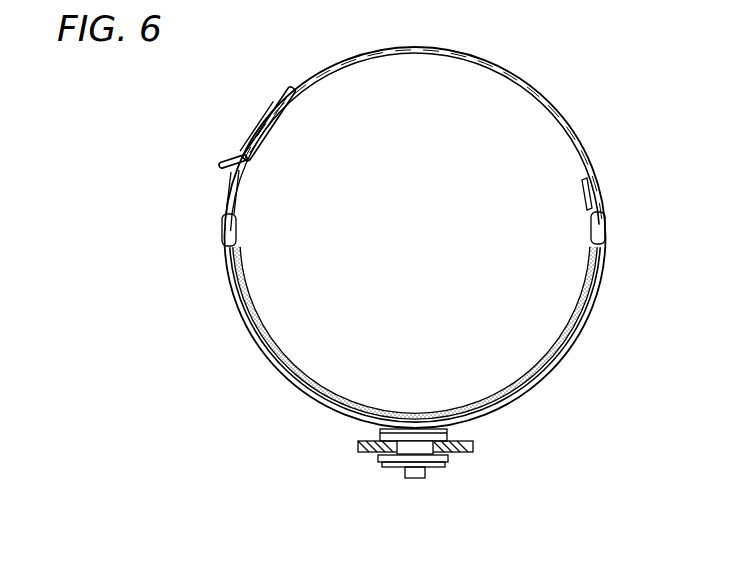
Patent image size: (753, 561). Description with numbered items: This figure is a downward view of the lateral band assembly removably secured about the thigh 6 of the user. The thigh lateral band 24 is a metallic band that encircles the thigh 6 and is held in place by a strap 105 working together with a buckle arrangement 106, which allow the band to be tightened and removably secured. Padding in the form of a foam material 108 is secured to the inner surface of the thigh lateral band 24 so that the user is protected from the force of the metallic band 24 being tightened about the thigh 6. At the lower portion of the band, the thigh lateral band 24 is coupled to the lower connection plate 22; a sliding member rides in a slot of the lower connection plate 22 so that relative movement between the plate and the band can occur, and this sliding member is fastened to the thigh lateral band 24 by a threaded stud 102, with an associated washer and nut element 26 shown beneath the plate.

The thigh 6 is at (421, 249).
The strap 105 is at (575, 137).
The buckle arrangement 106 is at (266, 124).
The foam material 108 is at (335, 403).
The thigh lateral band 24 is at (547, 370).
The lower connection plate 22 is at (463, 449).
The washer/nut 26 is at (445, 463).
The threaded stud 102 is at (400, 481).